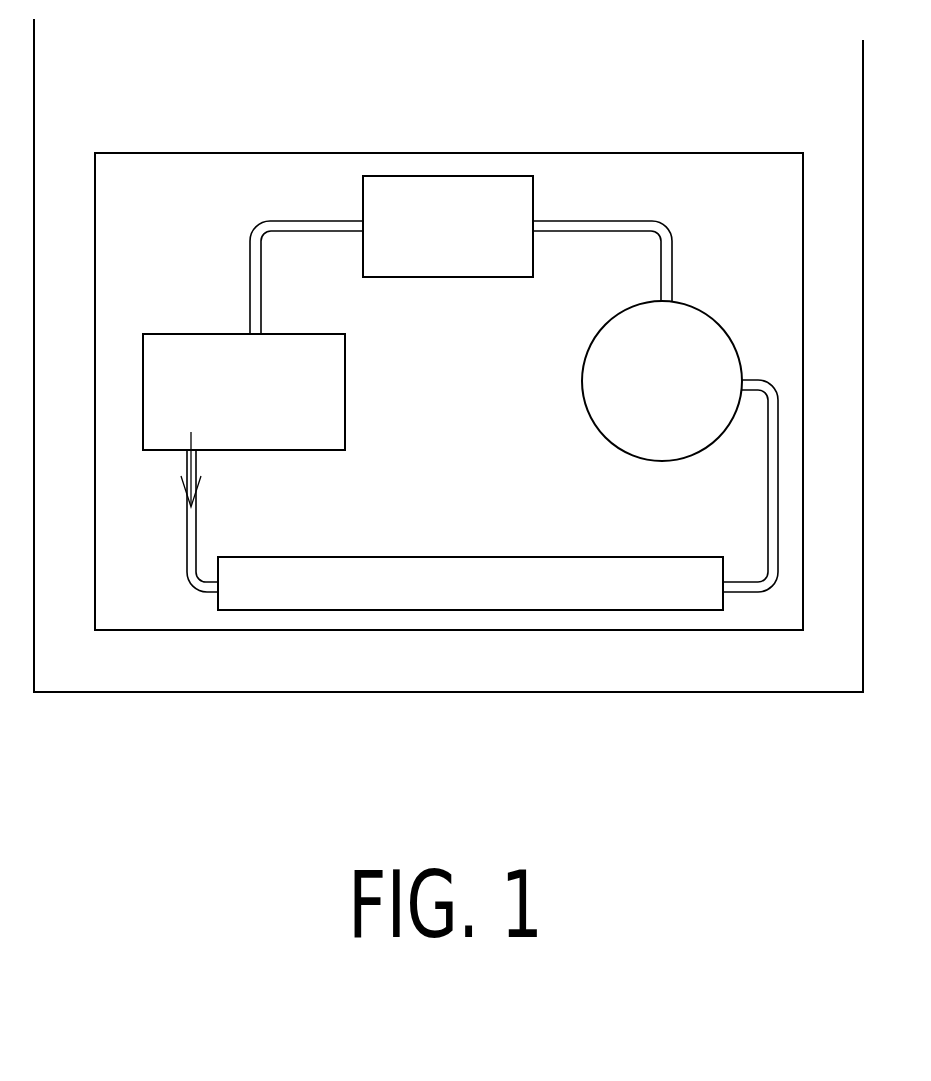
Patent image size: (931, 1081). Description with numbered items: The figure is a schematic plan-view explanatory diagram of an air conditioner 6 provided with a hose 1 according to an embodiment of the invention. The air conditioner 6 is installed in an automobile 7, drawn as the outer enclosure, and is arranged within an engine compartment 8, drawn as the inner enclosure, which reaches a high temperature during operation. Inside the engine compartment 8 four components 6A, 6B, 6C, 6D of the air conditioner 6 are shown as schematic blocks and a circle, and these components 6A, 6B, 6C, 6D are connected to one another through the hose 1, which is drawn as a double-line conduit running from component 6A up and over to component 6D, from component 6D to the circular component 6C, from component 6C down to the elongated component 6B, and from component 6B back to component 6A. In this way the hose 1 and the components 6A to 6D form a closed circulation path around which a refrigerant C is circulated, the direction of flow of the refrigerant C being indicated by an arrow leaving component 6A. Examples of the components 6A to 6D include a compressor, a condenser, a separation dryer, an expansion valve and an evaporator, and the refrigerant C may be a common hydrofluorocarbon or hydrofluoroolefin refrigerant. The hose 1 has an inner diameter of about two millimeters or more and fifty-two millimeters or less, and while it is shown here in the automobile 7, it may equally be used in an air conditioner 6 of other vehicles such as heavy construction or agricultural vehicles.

The hose 1 is at (607, 227).
The air conditioner 6 is at (200, 222).
The component 6A is at (287, 436).
The component 6B is at (513, 573).
The component 6C is at (600, 392).
The component 6D is at (423, 262).
The automobile 7 is at (728, 692).
The engine compartment 8 is at (95, 305).
The refrigerant C is at (191, 453).